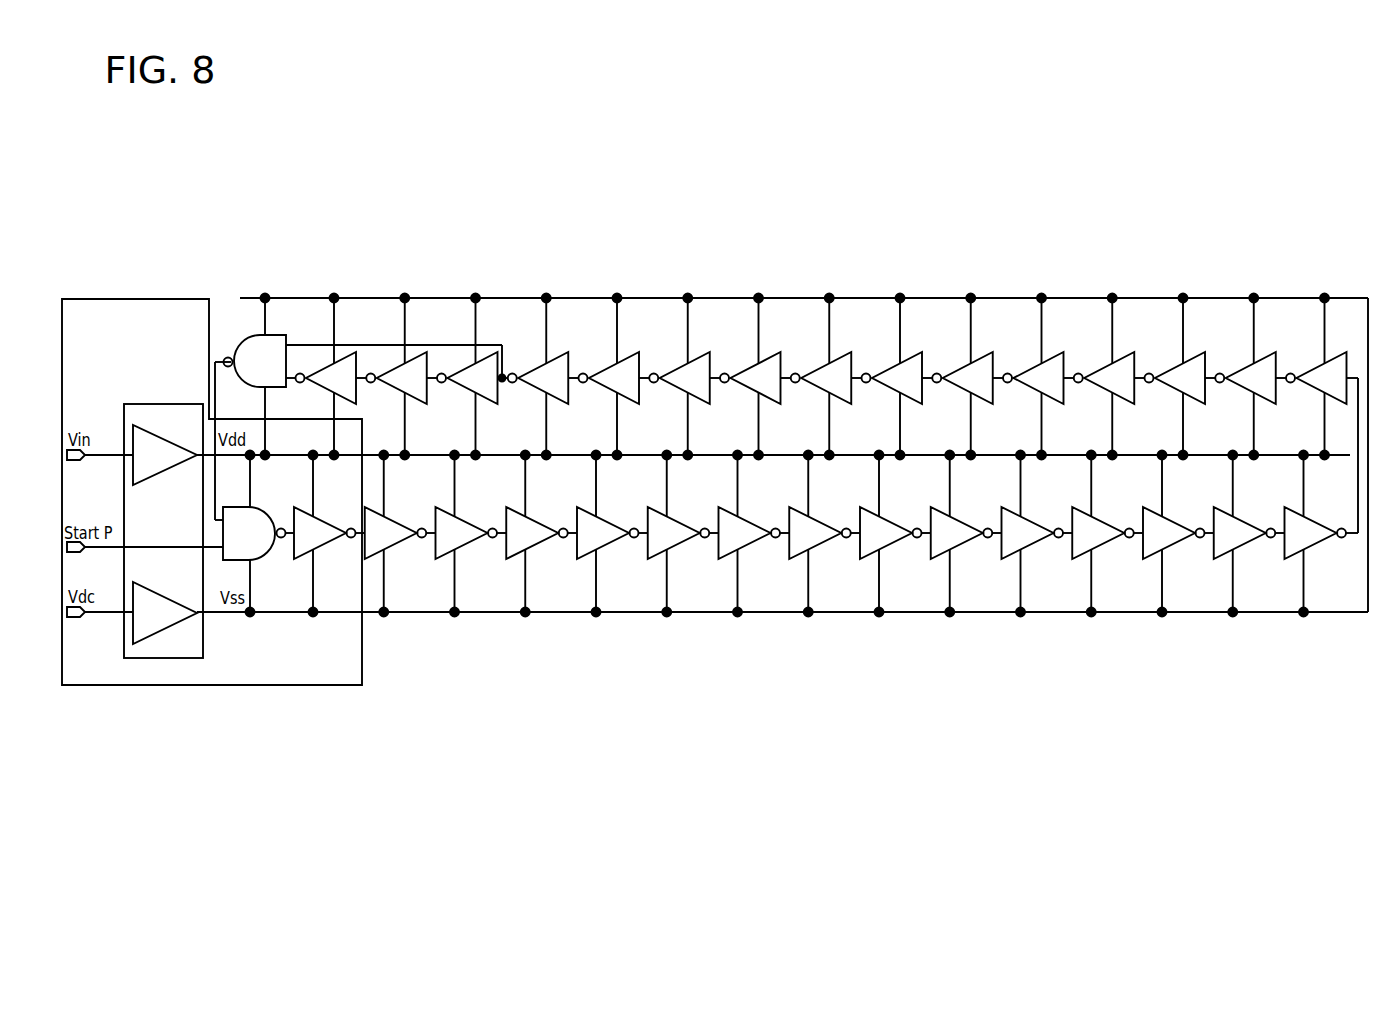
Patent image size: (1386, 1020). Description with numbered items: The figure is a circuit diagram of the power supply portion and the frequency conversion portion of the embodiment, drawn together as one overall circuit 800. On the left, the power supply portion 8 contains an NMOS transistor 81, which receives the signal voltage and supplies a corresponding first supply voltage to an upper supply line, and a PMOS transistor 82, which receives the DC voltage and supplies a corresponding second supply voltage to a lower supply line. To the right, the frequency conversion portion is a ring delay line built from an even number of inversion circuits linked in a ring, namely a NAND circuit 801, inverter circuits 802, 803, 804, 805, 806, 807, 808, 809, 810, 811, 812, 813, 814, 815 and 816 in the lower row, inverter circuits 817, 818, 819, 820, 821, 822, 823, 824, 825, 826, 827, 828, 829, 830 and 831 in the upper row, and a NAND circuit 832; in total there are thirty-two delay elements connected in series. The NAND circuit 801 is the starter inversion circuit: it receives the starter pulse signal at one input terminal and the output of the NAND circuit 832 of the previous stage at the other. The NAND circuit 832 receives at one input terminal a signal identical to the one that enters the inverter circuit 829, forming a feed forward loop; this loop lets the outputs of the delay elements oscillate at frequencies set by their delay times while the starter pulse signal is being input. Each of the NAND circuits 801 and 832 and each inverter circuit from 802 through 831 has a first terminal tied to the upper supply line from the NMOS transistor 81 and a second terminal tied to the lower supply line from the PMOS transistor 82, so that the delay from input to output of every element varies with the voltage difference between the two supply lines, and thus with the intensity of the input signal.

The power supply portion 8 is at (130, 659).
The NMOS transistor 81 is at (160, 440).
The PMOS transistor 82 is at (172, 627).
The ring oscillator circuit 800 is at (92, 686).
The NAND circuit 801 is at (266, 561).
The inverter circuit 802 is at (326, 545).
The inverter circuit 803 is at (398, 543).
The inverter circuit 804 is at (469, 543).
The inverter circuit 805 is at (540, 543).
The inverter circuit 806 is at (610, 543).
The inverter circuit 807 is at (681, 543).
The inverter circuit 808 is at (752, 543).
The inverter circuit 809 is at (822, 543).
The inverter circuit 810 is at (893, 543).
The inverter circuit 811 is at (964, 543).
The inverter circuit 812 is at (1035, 543).
The inverter circuit 813 is at (1106, 543).
The inverter circuit 814 is at (1177, 543).
The inverter circuit 815 is at (1247, 543).
The inverter circuit 816 is at (1318, 543).
The inverter circuit 817 is at (1314, 369).
The inverter circuit 818 is at (1243, 369).
The inverter circuit 819 is at (1173, 369).
The inverter circuit 820 is at (1102, 369).
The inverter circuit 821 is at (1032, 369).
The inverter circuit 822 is at (961, 369).
The inverter circuit 823 is at (891, 369).
The inverter circuit 824 is at (820, 369).
The inverter circuit 825 is at (749, 369).
The inverter circuit 826 is at (678, 369).
The inverter circuit 827 is at (608, 369).
The inverter circuit 828 is at (537, 369).
The inverter circuit 829 is at (466, 369).
The inverter circuit 830 is at (396, 369).
The inverter circuit 831 is at (326, 369).
The NAND circuit 832 is at (262, 335).